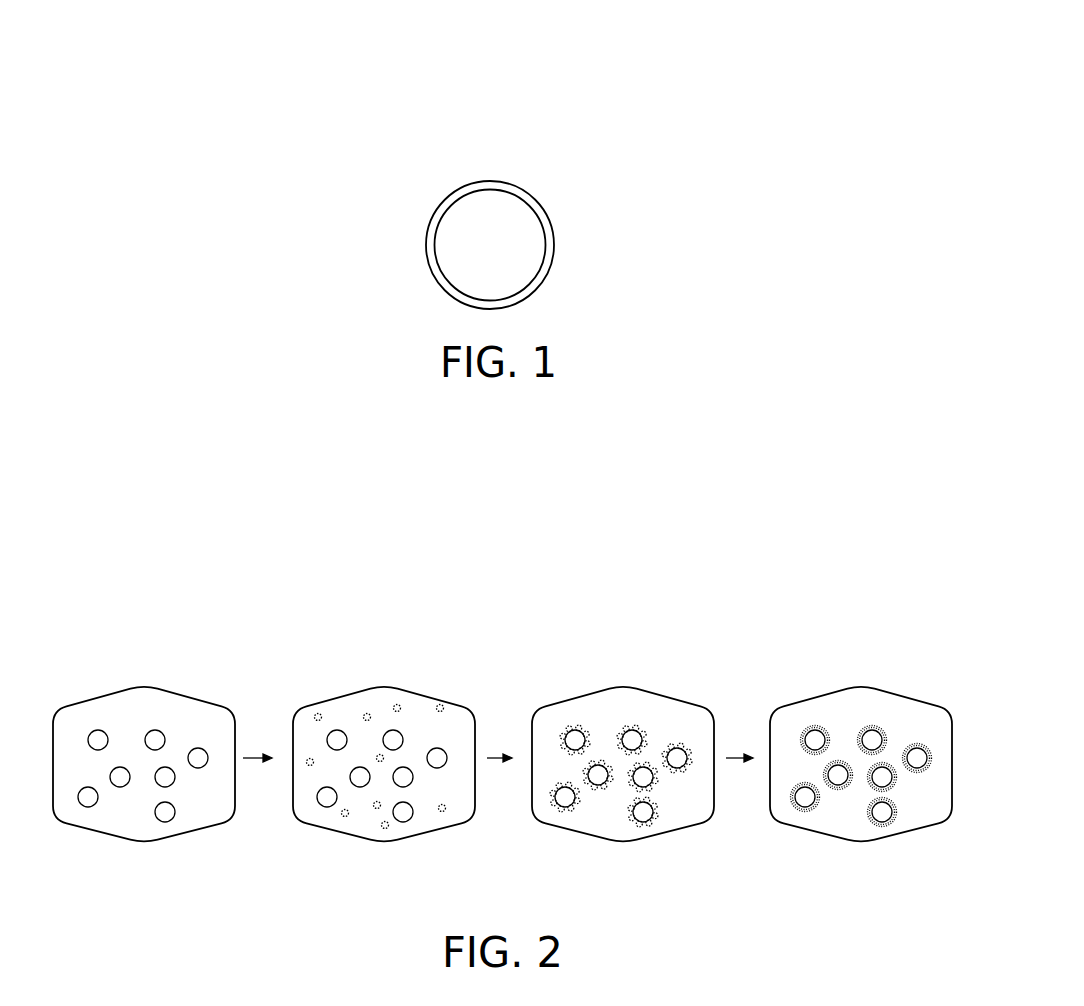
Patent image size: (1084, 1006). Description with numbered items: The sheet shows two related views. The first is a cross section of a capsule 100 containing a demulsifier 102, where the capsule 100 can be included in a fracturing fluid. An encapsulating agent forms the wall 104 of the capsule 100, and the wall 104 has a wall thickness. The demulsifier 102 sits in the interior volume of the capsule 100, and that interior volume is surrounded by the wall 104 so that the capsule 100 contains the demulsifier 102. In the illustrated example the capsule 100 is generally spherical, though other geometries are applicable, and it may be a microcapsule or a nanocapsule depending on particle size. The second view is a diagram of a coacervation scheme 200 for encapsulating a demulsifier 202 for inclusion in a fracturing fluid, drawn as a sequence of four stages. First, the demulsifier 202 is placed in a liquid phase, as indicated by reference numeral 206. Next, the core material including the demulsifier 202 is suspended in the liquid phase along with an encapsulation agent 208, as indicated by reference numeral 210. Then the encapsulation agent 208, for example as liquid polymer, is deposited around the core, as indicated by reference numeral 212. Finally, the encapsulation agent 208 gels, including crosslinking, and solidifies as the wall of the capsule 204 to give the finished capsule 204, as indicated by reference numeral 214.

In FIG. 1, the capsule 100 is at (472, 207).
In FIG. 1, the demulsifier 102 is at (477, 251).
In FIG. 1, the wall 104 is at (534, 200).
In FIG. 2, the coacervation scheme 200 is at (159, 570).
In FIG. 2, the demulsifier 202 is at (88, 797).
In FIG. 2, the capsule 204 is at (880, 713).
In FIG. 2, the placing the demulsifier in a liquid phase 206 is at (118, 688).
In FIG. 2, the encapsulation agent 208 is at (442, 812).
In FIG. 2, the suspending the core material with the encapsulation agent 210 is at (356, 688).
In FIG. 2, the deposition of the encapsulation agent around the core 212 is at (595, 688).
In FIG. 2, the gelling and solidification of the encapsulation agent 214 is at (859, 749).